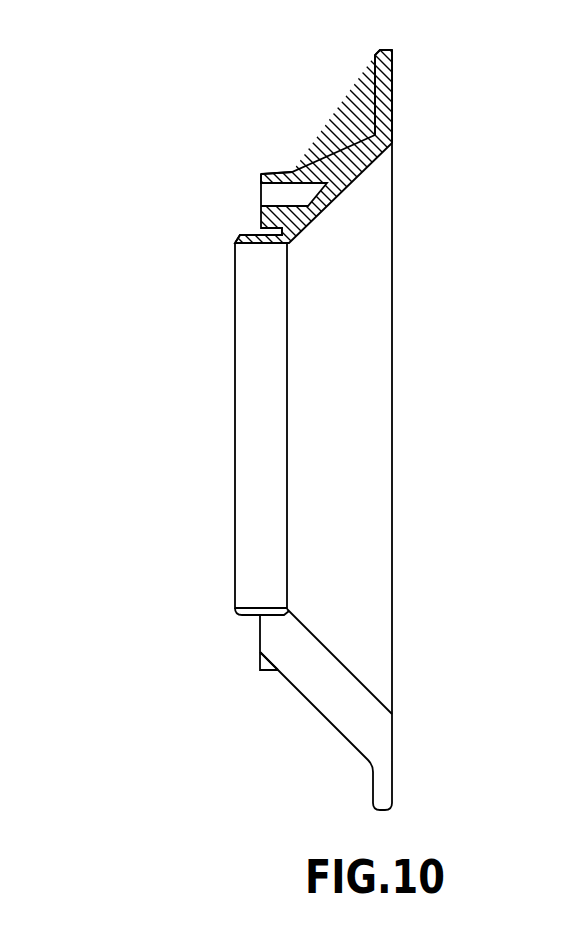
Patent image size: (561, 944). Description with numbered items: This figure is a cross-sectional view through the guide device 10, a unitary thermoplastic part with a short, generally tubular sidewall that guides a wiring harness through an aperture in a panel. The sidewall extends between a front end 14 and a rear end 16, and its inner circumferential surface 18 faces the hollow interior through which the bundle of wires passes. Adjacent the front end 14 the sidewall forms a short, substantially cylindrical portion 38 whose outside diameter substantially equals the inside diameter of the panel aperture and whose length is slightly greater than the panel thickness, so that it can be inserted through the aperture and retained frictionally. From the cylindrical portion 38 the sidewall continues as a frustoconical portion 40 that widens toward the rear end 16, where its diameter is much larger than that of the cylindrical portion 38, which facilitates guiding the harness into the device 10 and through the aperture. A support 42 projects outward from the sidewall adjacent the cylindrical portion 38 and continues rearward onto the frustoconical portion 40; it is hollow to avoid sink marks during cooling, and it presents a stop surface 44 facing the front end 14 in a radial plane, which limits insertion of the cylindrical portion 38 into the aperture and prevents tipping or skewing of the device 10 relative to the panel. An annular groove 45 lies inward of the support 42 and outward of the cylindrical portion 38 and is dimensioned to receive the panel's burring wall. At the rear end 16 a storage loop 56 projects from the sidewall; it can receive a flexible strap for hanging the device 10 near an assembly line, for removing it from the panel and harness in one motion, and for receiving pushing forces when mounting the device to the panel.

The guide device 10 is at (440, 177).
The front end 14 is at (235, 352).
The rear end 16 is at (392, 275).
The inner circumferential surface 18 is at (367, 338).
The cylindrical portion 38 is at (253, 618).
The frustoconical portion 40 is at (348, 436).
The support 42 is at (283, 173).
The stop surface 44 is at (260, 175).
The annular groove 45 is at (261, 229).
The storage loop 56 is at (382, 78).